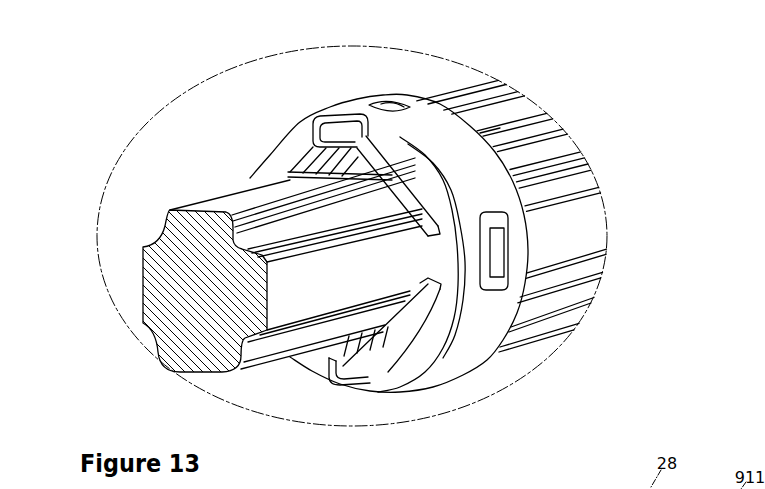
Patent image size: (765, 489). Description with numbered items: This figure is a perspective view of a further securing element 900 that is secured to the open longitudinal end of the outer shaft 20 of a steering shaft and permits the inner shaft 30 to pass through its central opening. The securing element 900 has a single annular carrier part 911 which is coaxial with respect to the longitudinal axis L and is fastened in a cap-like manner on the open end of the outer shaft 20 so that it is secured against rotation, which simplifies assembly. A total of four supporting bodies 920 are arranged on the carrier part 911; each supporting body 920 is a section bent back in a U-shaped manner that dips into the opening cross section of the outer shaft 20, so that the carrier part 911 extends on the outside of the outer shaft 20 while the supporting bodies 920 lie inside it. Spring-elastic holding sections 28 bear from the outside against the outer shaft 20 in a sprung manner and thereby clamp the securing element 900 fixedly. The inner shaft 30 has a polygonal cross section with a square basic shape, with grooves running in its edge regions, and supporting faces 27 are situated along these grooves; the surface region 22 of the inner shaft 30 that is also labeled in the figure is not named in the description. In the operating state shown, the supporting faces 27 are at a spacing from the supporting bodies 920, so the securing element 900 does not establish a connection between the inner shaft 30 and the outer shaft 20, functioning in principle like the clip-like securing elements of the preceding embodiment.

The outer shaft 20 is at (590, 212).
The top surface of bar 22 is at (224, 210).
The supporting faces 27 is at (147, 246).
The spring-elastic holding sections 28 is at (392, 108).
The inner shaft 30 is at (294, 303).
The securing element 900 is at (503, 168).
The annular carrier part 911 is at (490, 131).
The supporting body 920 is at (296, 158).
The longitudinal axis L is at (140, 318).